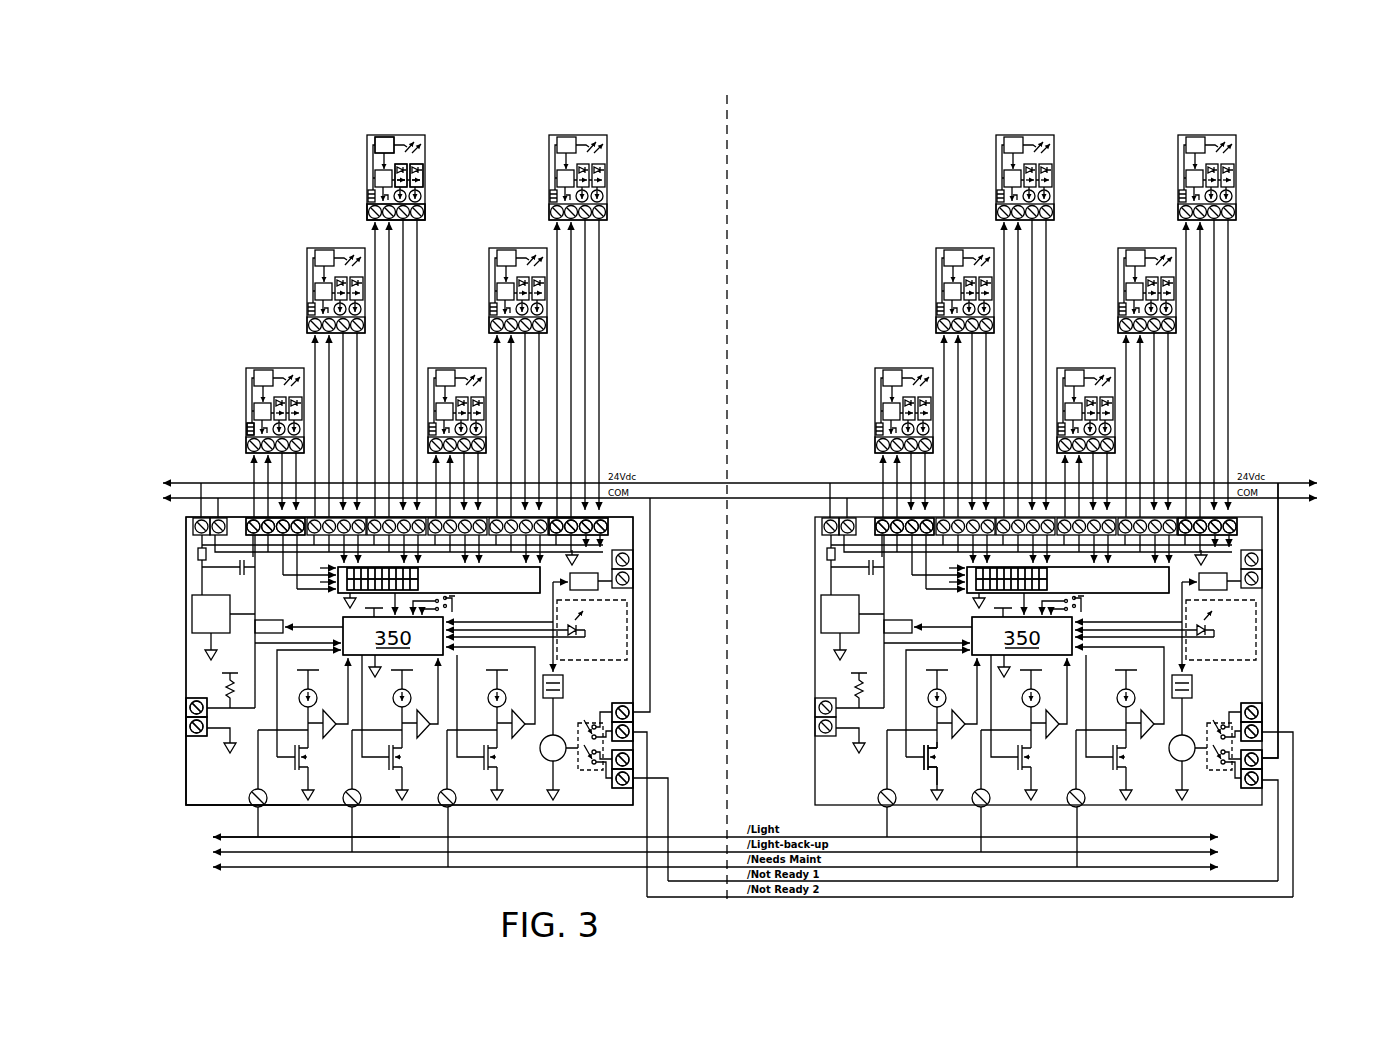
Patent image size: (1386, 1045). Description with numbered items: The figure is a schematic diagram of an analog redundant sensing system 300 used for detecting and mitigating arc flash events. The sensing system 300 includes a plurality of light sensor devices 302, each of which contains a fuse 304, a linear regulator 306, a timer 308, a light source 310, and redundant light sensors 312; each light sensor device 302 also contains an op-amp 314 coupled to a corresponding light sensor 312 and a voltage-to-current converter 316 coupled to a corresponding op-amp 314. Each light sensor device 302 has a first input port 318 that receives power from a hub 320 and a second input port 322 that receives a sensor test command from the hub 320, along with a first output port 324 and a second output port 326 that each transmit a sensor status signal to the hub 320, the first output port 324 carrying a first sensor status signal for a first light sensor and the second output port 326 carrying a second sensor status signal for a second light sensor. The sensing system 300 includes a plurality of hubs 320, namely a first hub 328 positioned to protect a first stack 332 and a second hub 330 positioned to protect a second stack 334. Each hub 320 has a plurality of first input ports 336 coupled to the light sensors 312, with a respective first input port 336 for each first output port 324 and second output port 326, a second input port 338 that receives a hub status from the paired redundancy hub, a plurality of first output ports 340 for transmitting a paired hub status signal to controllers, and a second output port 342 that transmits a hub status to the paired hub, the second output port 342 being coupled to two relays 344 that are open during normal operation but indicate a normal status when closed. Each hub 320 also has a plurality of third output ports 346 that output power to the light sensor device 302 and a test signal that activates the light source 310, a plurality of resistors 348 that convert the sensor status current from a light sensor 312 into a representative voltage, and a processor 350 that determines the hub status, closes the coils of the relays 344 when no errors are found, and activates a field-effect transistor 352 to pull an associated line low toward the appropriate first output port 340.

The analog redundant sensing system 300 is at (176, 866).
The light sensor device 302 is at (320, 130).
The fuse 304 is at (246, 430).
The linear regulator 306 is at (310, 287).
The timer 308 is at (265, 368).
The light source 310 is at (425, 140).
The redundant light sensors 312 is at (429, 164).
The op-amp 314 is at (428, 183).
The voltage-to-current converter 316 is at (428, 208).
The first input port 318 is at (994, 209).
The hub 320 is at (170, 636).
The second input port 322 is at (936, 337).
The first output port 324 is at (604, 219).
The second output port 326 is at (1234, 219).
The first hub 328 is at (186, 782).
The second hub 330 is at (1264, 622).
The first stack 332 is at (623, 108).
The second stack 334 is at (850, 108).
The first input ports 336 is at (614, 516).
The second input port 338 is at (186, 714).
The first output ports 340 is at (363, 816).
The second output port 342 is at (1269, 722).
The relays 344 is at (651, 722).
The third output ports 346 is at (862, 514).
The resistors 348 is at (468, 580).
The processor 350 is at (707, 636).
The field-effect transistor 352 is at (942, 758).